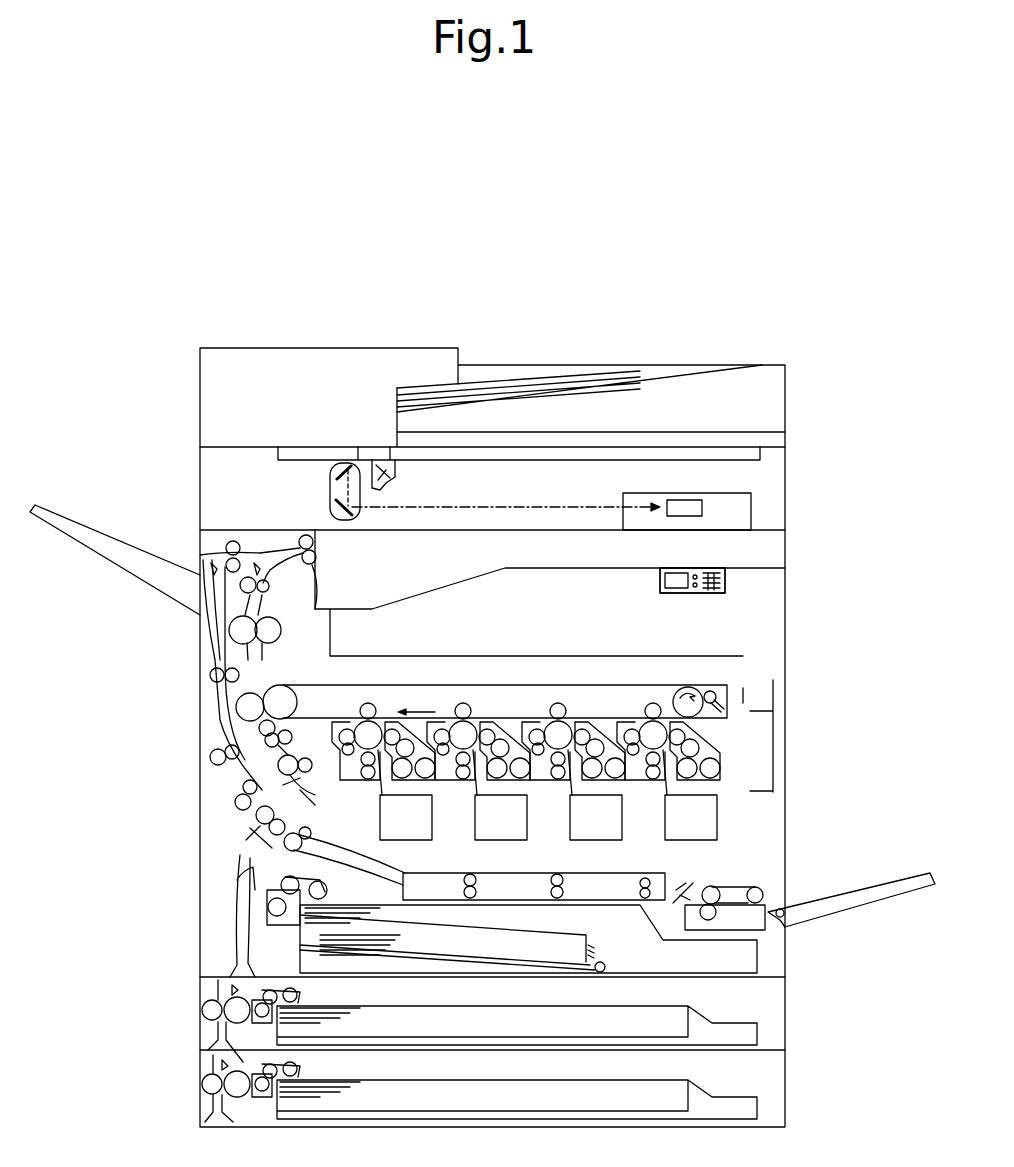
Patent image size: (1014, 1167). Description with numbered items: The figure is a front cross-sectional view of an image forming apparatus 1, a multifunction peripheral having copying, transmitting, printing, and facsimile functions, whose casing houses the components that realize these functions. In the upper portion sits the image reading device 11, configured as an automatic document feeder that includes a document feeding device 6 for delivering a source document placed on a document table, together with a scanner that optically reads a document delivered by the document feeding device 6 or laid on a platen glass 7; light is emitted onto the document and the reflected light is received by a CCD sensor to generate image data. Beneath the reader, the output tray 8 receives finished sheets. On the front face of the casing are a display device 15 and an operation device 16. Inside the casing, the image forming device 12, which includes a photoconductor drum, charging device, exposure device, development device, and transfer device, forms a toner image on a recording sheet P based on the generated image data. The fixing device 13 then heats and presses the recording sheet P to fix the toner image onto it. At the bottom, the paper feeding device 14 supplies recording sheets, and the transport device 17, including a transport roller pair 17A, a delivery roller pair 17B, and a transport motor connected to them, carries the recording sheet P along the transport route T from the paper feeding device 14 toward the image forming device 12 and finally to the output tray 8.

The image forming apparatus 1 is at (497, 330).
The document feeding device 6 is at (577, 361).
The platen glass 7 is at (642, 458).
The output tray 8 is at (443, 585).
The image reading device 11 is at (199, 483).
The image forming device 12 is at (750, 751).
The fixing device 13 is at (230, 630).
The paper feeding device 14 is at (758, 1005).
The display device 15 is at (668, 572).
The operation device 16 is at (727, 583).
The transport device 17 is at (248, 729).
The transport roller pair 17A is at (300, 792).
The delivery roller pair 17B is at (315, 553).
The transport route T is at (253, 857).
The recording sheet P is at (586, 936).